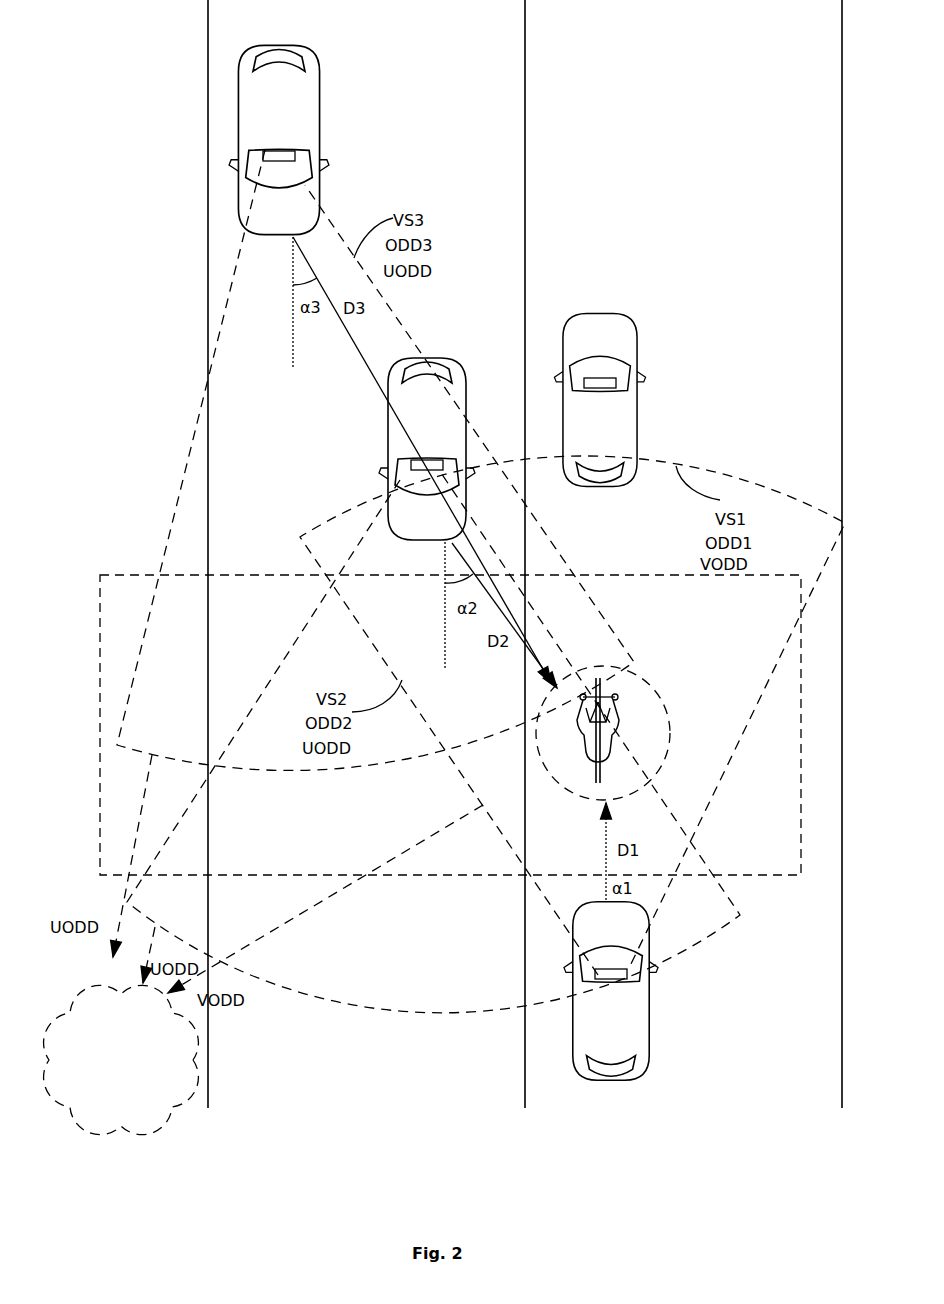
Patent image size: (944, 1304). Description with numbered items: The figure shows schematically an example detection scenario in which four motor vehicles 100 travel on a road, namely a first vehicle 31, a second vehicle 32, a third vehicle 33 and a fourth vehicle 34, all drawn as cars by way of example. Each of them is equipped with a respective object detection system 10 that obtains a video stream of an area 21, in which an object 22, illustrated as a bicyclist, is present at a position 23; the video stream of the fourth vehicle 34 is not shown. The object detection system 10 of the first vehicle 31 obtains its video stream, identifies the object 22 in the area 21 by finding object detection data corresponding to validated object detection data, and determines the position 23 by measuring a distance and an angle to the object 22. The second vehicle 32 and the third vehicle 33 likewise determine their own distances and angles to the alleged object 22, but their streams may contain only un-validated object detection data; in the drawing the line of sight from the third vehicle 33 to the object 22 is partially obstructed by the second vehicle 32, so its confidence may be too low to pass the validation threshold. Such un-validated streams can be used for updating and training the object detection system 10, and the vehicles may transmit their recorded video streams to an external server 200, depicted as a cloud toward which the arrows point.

The object detection system 10 is at (283, 150).
The motor vehicle 100 is at (443, 562).
The first vehicle 31 is at (611, 991).
The second vehicle 32 is at (427, 449).
The third vehicle 33 is at (279, 139).
The fourth vehicle 34 is at (599, 400).
The area 21 is at (664, 580).
The object 22 is at (586, 744).
The position 23 is at (617, 704).
The external server 200 is at (121, 1059).